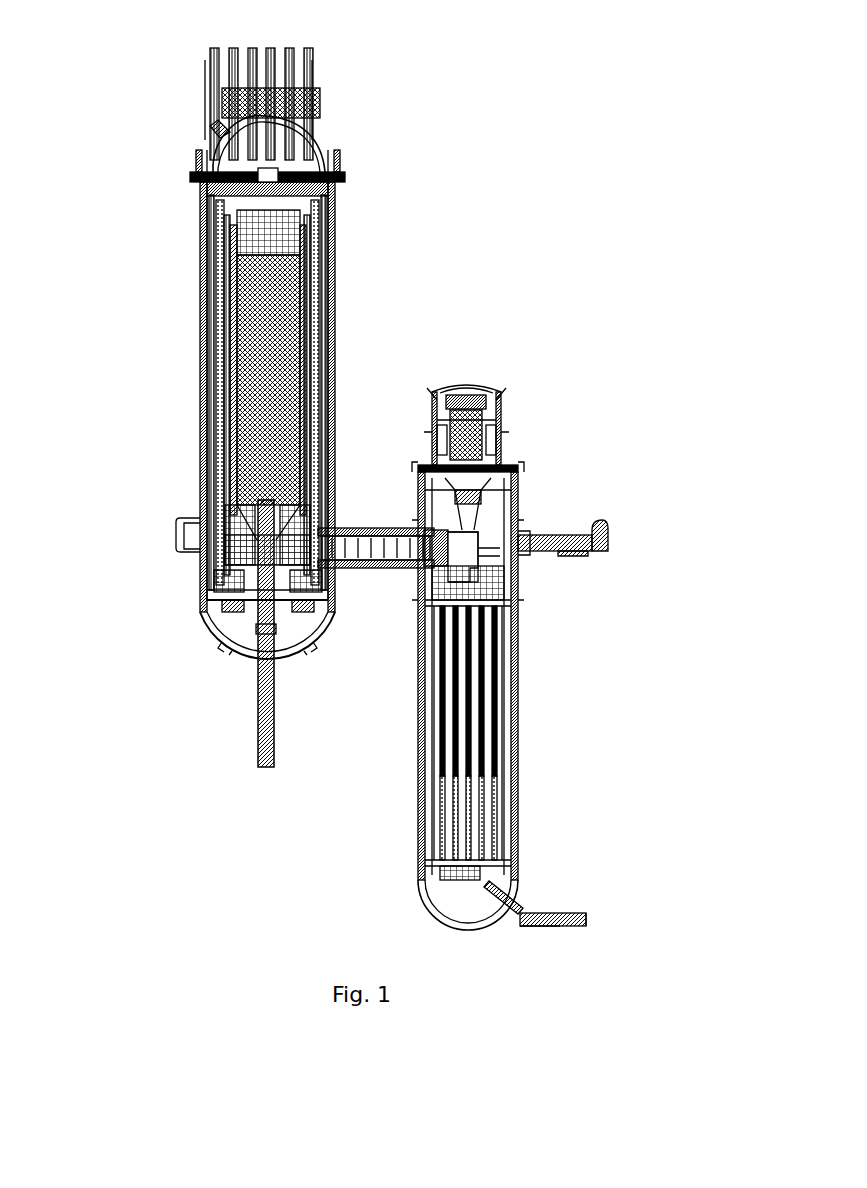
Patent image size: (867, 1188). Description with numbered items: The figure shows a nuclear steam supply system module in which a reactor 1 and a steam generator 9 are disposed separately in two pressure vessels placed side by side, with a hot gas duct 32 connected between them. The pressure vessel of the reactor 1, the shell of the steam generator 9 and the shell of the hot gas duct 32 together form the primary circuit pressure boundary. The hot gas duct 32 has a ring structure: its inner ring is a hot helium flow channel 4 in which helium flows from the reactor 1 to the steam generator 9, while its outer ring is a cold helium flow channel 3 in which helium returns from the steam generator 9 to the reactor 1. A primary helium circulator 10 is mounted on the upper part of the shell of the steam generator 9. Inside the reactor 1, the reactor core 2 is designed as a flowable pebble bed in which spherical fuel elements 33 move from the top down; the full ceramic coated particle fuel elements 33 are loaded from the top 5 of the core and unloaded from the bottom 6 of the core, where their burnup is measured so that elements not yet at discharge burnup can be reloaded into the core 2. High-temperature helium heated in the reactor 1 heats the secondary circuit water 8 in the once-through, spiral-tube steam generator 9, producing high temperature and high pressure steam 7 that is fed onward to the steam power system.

The reactor 1 is at (200, 428).
The reactor core 2 is at (198, 322).
The cold helium flow channel 3 is at (200, 477).
The hot helium flow channel 4 is at (255, 578).
The top of the core 5 is at (258, 162).
The bottom of the core 6 is at (258, 697).
The steam 7 is at (545, 540).
The secondary circuit water 8 is at (560, 918).
The steam generator 9 is at (508, 715).
The primary helium circulator 10 is at (507, 413).
The hot gas duct 32 is at (387, 573).
The fuel elements 33 is at (334, 365).